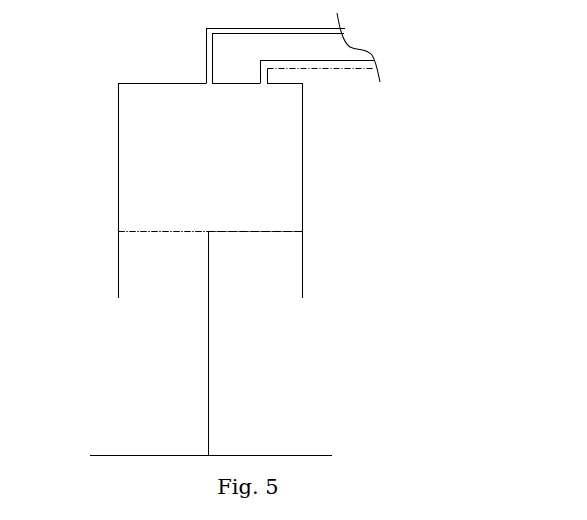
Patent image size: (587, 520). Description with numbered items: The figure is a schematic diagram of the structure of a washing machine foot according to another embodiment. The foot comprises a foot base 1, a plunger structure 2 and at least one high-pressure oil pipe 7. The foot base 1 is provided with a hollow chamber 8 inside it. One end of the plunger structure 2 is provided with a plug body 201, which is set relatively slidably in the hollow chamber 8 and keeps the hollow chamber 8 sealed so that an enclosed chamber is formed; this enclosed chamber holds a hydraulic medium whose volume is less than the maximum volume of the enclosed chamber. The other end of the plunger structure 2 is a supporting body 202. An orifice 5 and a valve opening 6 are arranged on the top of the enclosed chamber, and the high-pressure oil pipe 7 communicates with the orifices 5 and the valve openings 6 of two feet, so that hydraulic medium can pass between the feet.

The foot base 1 is at (302, 190).
The plunger structure 2 is at (207, 373).
The orifice 5 is at (205, 83).
The valve opening 6 is at (267, 85).
The high-pressure oil pipe 7 is at (280, 35).
The hollow chamber 8 is at (140, 190).
The plug body 201 is at (246, 230).
The supporting body 202 is at (297, 455).